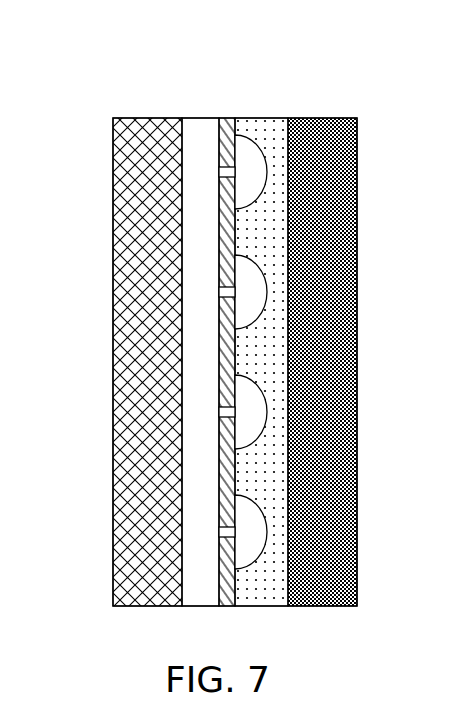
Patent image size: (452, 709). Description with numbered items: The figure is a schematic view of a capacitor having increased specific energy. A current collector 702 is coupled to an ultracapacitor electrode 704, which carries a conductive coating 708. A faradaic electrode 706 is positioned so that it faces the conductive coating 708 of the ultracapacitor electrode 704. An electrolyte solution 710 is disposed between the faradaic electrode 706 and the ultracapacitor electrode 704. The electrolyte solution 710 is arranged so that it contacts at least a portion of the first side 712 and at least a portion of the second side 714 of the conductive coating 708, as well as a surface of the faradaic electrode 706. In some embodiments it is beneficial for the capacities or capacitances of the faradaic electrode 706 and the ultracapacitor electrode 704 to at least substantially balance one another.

The current collector 702 is at (320, 118).
The ultracapacitor electrode 704 is at (267, 120).
The faradaic electrode 706 is at (147, 120).
The conductive coating 708 is at (233, 367).
The electrolyte solution 710 is at (207, 130).
The first side 712 is at (218, 583).
The second side 714 is at (235, 540).